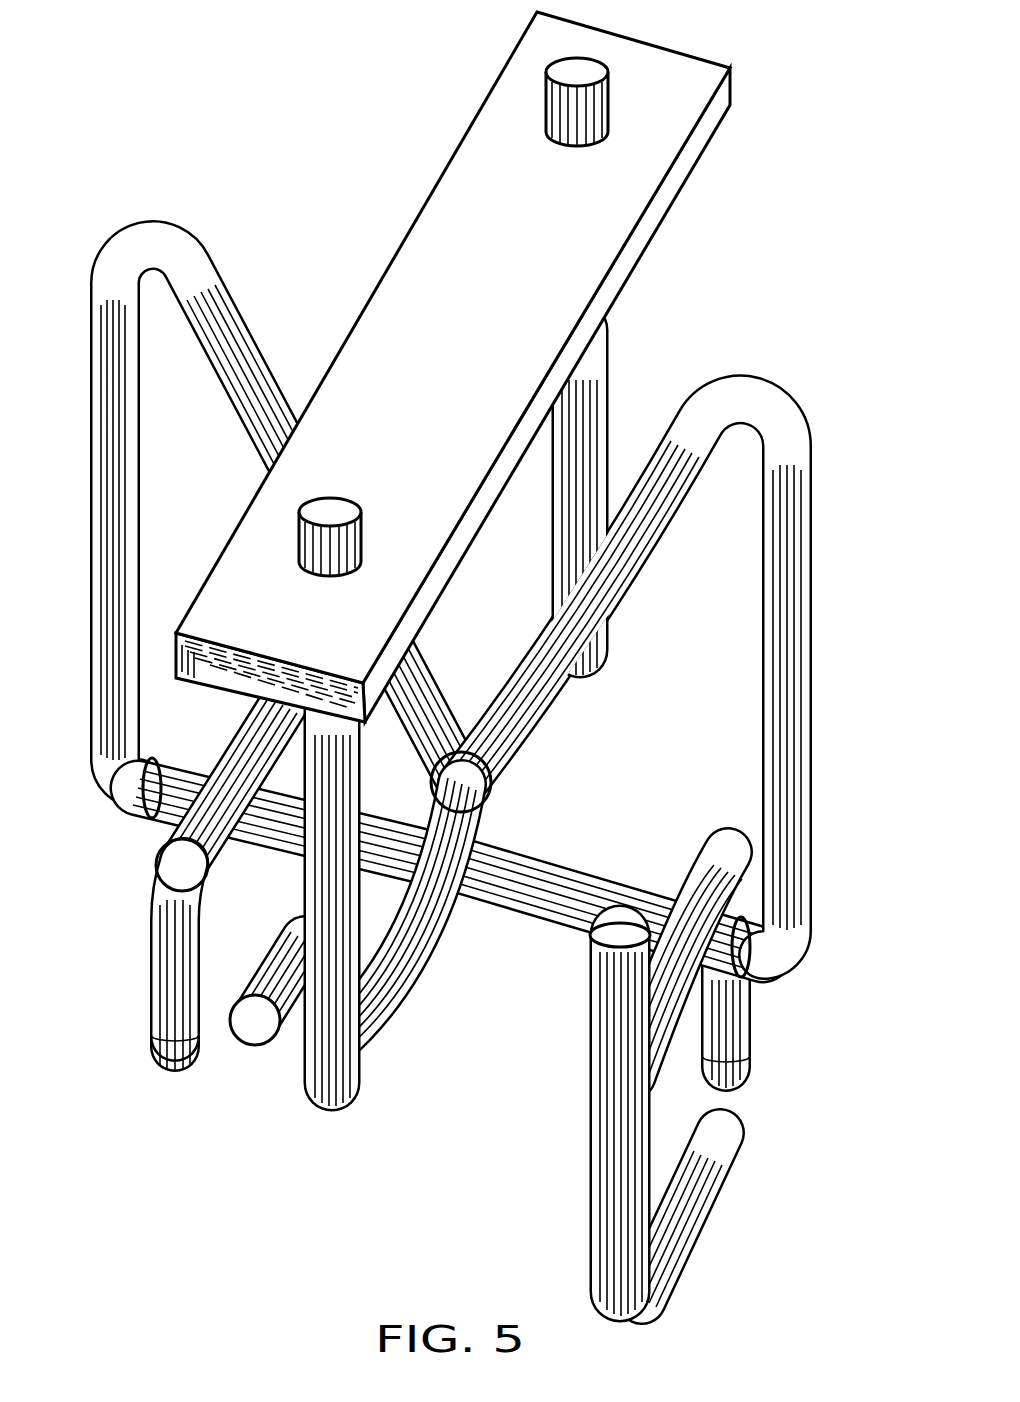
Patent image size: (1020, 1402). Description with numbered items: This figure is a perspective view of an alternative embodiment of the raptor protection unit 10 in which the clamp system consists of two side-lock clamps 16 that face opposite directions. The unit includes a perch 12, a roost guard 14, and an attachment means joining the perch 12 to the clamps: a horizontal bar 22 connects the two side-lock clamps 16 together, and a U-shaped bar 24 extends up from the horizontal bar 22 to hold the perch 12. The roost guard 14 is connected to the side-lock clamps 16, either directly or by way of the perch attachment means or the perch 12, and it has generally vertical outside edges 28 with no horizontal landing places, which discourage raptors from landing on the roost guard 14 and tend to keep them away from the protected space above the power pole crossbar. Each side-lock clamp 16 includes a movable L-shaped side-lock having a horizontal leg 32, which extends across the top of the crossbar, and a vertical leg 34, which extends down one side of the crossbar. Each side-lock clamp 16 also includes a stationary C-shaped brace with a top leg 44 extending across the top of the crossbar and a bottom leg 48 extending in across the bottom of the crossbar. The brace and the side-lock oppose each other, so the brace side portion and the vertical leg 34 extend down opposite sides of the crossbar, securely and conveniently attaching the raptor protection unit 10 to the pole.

The raptor protection unit 10 is at (483, 664).
The perch 12 is at (418, 408).
The roost guard 14 is at (815, 610).
The side-lock clamp 16 is at (148, 968).
The horizontal bar 22 is at (497, 917).
The U-shaped bar 24 is at (548, 607).
The vertical outside edge 28 is at (692, 410).
The horizontal leg 32 is at (158, 873).
The vertical leg 34 is at (752, 1032).
The top leg 44 is at (660, 962).
The bottom leg 48 is at (278, 912).